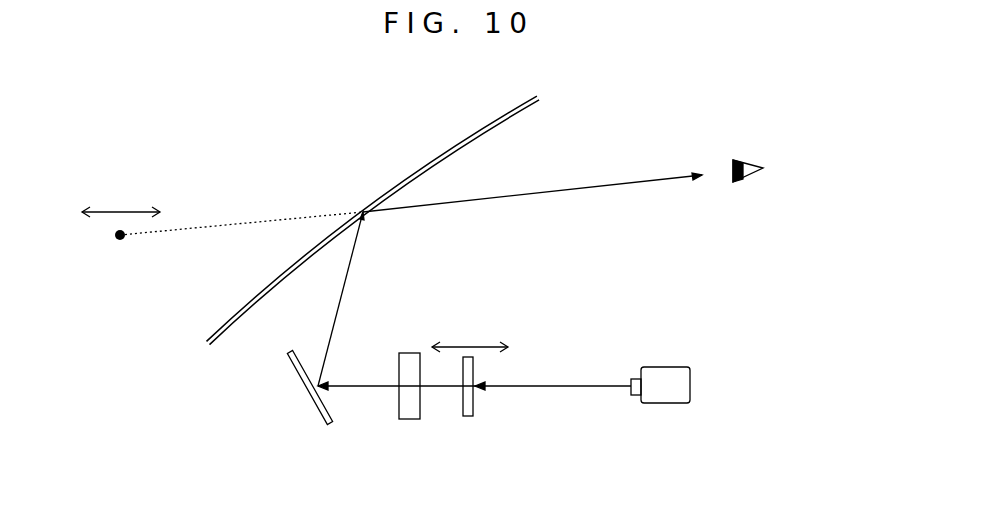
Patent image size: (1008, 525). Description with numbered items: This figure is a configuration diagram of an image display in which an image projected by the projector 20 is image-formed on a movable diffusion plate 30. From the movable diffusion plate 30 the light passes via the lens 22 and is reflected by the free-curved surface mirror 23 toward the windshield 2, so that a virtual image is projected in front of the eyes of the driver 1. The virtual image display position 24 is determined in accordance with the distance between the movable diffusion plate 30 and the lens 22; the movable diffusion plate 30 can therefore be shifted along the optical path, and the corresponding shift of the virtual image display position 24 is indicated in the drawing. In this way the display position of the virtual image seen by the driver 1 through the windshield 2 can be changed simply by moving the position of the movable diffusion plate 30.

The driver 1 is at (783, 167).
The windshield 2 is at (513, 117).
The projector 20 is at (663, 403).
The lens 22 is at (403, 422).
The free-curved surface mirror 23 is at (307, 395).
The virtual image display position 24 is at (211, 199).
The movable diffusion plate 30 is at (470, 417).